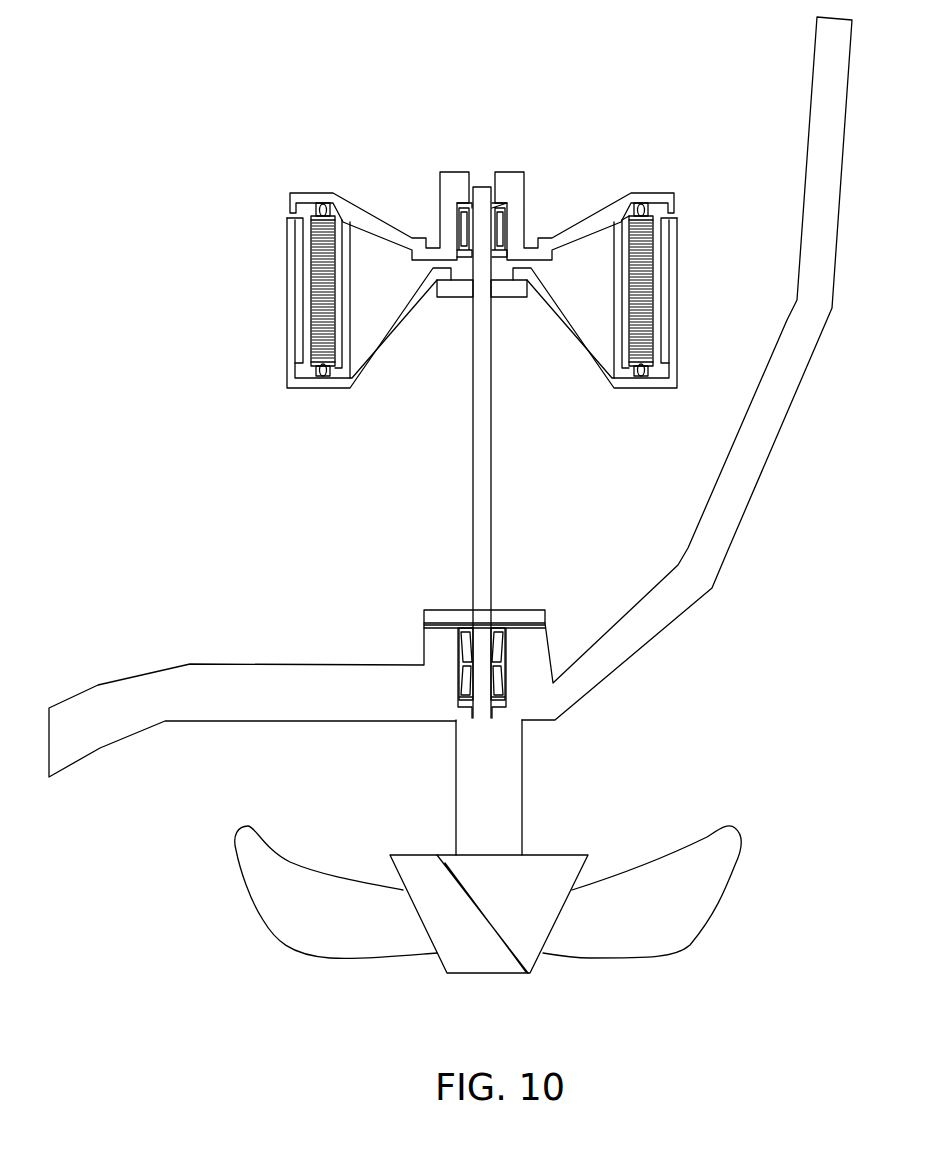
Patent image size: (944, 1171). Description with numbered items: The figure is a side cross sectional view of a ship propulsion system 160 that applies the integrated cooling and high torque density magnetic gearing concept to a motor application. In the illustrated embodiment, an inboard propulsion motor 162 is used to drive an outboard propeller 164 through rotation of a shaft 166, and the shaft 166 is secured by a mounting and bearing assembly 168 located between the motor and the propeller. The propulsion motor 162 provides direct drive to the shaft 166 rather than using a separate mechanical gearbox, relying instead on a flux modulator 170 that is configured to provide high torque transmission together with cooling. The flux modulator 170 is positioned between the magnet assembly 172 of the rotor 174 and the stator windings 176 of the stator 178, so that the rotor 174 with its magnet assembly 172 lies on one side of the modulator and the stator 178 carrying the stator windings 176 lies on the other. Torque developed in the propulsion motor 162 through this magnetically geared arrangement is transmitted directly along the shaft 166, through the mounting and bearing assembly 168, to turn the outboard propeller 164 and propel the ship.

The ship propulsion system 160 is at (165, 68).
The inboard propulsion motor 162 is at (265, 402).
The outboard propeller 164 is at (273, 908).
The shaft 166 is at (475, 550).
The mounting and bearing assembly 168 is at (430, 643).
The flux modulator 170 is at (306, 328).
The magnet assembly 172 is at (670, 325).
The rotor 174 is at (322, 385).
The stator windings 176 is at (644, 385).
The stator 178 is at (620, 263).